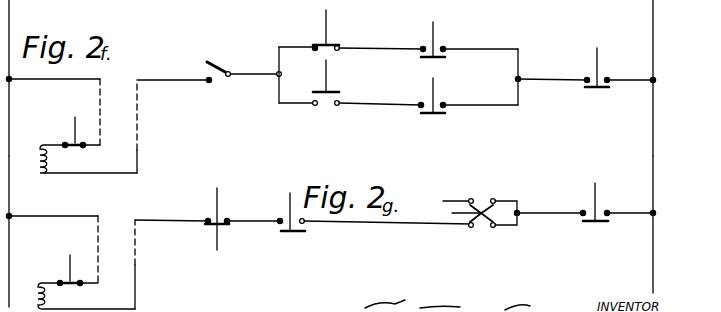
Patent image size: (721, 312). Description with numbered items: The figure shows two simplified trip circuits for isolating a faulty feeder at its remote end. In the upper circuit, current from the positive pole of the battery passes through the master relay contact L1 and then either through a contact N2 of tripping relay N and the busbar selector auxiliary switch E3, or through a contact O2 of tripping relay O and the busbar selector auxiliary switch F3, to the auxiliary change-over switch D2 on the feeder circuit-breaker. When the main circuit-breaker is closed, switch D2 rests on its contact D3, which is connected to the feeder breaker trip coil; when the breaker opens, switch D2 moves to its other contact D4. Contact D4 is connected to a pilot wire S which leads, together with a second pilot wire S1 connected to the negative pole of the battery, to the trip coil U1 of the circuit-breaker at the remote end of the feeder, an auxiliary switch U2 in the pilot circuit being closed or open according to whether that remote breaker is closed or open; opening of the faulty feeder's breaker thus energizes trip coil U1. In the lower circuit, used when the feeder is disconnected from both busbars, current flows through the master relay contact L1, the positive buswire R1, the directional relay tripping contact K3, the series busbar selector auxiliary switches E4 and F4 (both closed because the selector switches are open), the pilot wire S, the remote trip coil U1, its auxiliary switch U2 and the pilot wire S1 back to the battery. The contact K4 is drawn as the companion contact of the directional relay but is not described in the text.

In FIG. 2F, the pilot wire S1 is at (102, 100).
In FIG. 2G, the pilot wire S1 is at (99, 234).
In FIG. 2F, the pilot wire S is at (137, 107).
In FIG. 2G, the pilot wire S is at (137, 239).
In FIG. 2F, the trip coil U1 is at (77, 141).
In FIG. 2G, the trip coil U1 is at (34, 290).
In FIG. 2F, the auxiliary switch U2 is at (66, 142).
In FIG. 2G, the auxiliary switch U2 is at (62, 280).
In FIG. 2F, the auxiliary change-over switch D2 is at (224, 69).
In FIG. 2F, the contact D3 is at (207, 62).
In FIG. 2F, the contact D4 is at (208, 84).
In FIG. 2F, the auxiliary switch E3 is at (332, 43).
In FIG. 2F, the auxiliary switch F3 is at (333, 91).
In FIG. 2F, the contact N2 is at (439, 47).
In FIG. 2F, the contact O2 is at (440, 110).
In FIG. 2F, the master relay contact L1 is at (600, 92).
In FIG. 2G, the master relay contact L1 is at (598, 225).
In FIG. 2G, the auxiliary switch F4 is at (242, 231).
In FIG. 2G, the auxiliary switch E4 is at (298, 233).
In FIG. 2G, the tripping contact K3 is at (479, 228).
In FIG. 2G, the transfer contact upper K4 is at (480, 205).
In FIG. 2G, the positive buswire R1 is at (518, 203).